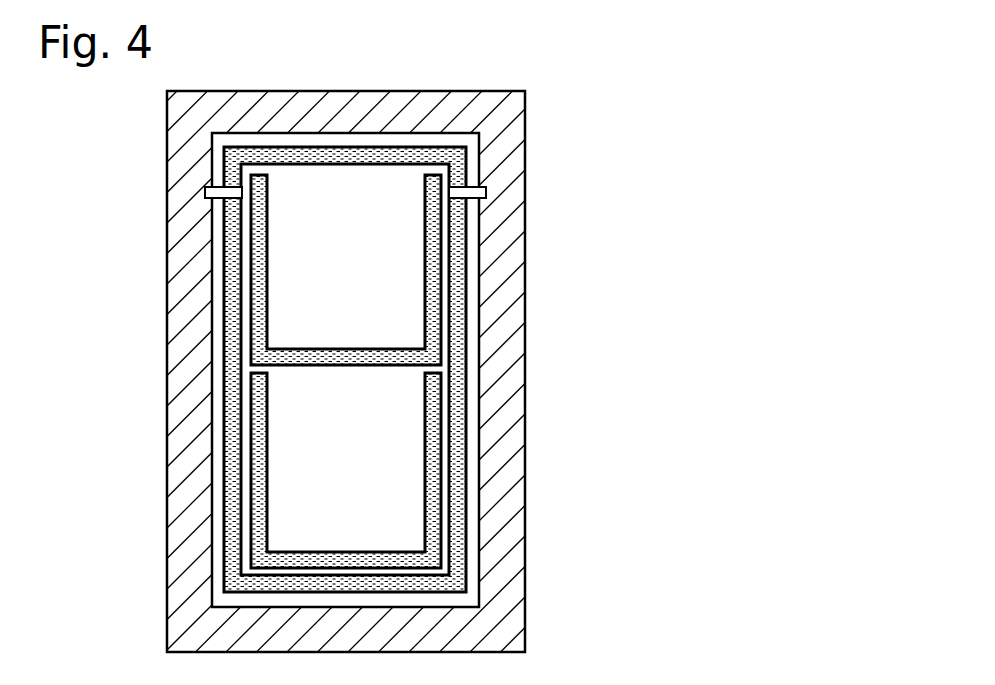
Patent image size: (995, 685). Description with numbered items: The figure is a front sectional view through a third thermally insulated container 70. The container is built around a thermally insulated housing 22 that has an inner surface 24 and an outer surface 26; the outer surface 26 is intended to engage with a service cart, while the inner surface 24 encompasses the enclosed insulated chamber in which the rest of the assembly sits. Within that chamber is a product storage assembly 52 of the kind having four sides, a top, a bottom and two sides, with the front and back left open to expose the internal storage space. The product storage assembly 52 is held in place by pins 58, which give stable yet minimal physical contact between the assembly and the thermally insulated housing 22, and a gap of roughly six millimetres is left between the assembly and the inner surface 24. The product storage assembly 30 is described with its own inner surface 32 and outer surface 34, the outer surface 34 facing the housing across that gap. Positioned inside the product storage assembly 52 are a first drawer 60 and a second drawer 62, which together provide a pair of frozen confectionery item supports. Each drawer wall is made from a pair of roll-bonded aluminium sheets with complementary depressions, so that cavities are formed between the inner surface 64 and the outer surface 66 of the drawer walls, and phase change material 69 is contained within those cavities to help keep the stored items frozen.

The thermally insulated housing 22 is at (488, 632).
The inner surface 24 is at (480, 424).
The outer surface 26 is at (526, 376).
The product storage assembly 30 is at (233, 495).
The inner surface 32 is at (232, 547).
The outer surface 34 is at (226, 443).
The product storage assembly 52 is at (462, 470).
The pins 58 is at (222, 190).
The first drawer 60 is at (398, 290).
The second drawer 62 is at (385, 542).
The inner surface 64 is at (266, 236).
The outer surface 66 is at (258, 293).
The phase change material 69 is at (437, 556).
The third thermally insulated container 70 is at (622, 107).